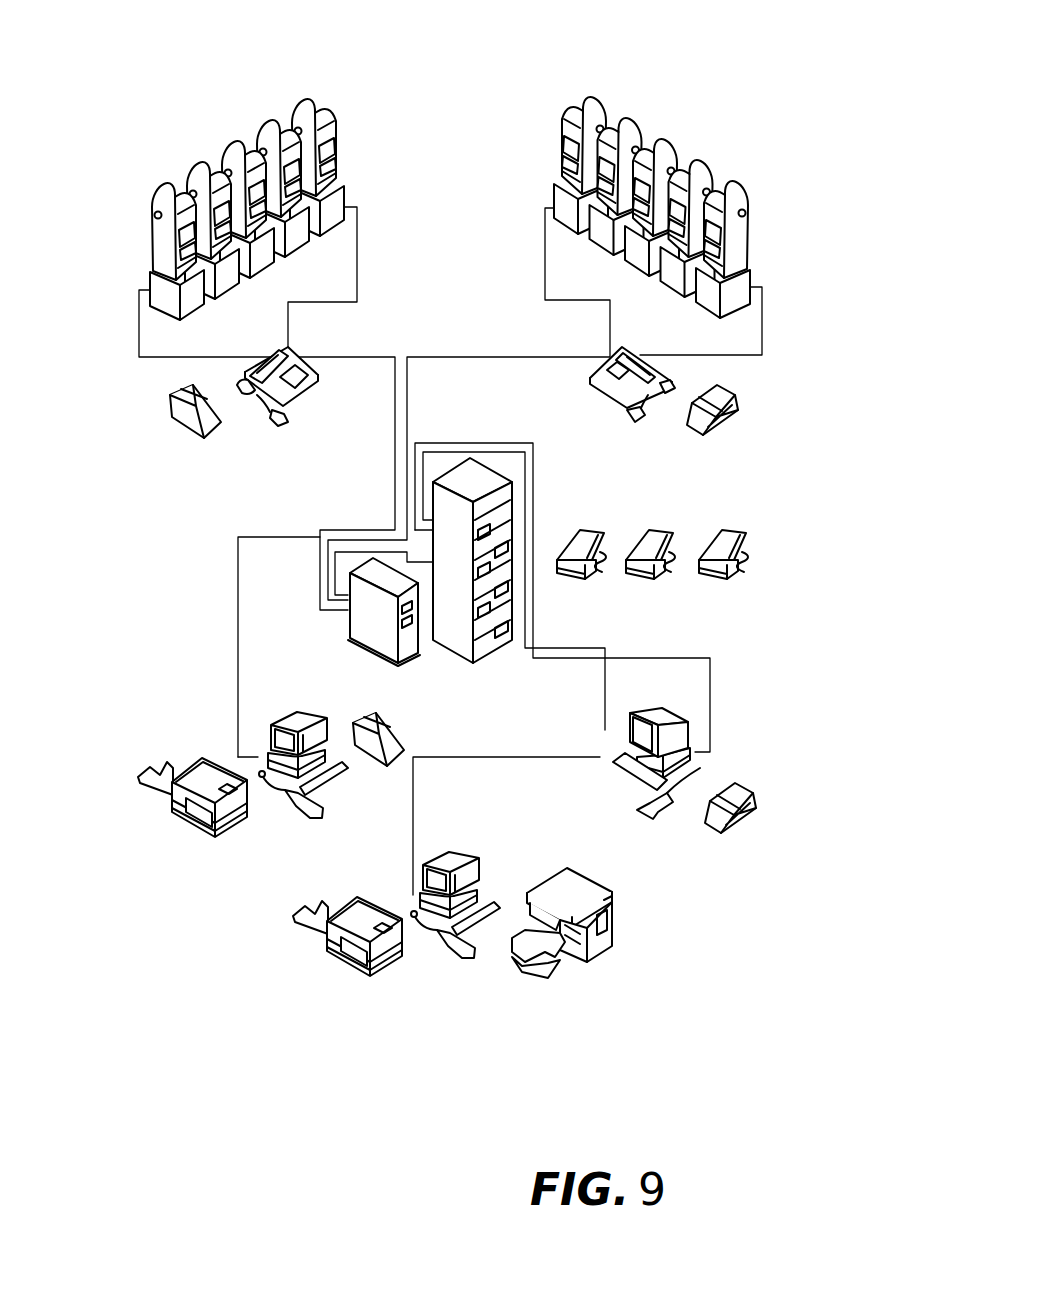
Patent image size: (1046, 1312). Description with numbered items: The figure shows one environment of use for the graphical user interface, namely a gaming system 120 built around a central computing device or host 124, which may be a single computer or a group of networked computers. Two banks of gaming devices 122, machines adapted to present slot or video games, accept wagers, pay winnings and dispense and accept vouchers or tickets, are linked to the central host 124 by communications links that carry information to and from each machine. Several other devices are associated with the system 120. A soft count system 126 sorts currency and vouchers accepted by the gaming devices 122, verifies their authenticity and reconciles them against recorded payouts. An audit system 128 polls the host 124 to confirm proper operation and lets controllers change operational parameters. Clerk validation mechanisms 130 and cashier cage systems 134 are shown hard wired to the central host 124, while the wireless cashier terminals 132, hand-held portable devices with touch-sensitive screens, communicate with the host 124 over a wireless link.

The gaming system 120 is at (457, 544).
The gaming devices 122 is at (762, 232).
The central host 124 is at (447, 510).
The soft count system 126 is at (390, 1020).
The audit system 128 is at (165, 851).
The clerk validation mechanisms 130 is at (738, 409).
The wireless cashier terminals 132 is at (758, 540).
The cashier cage systems 134 is at (762, 768).